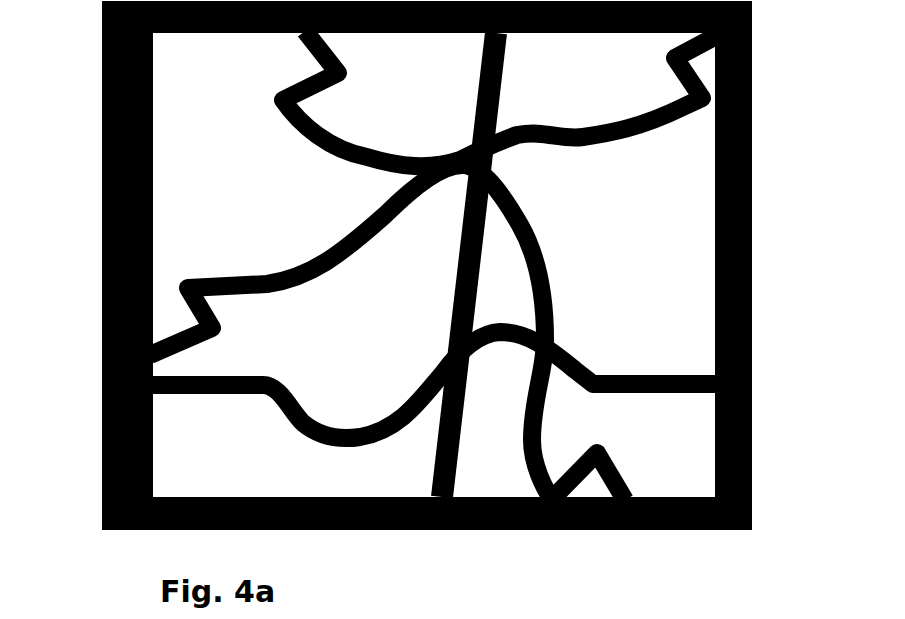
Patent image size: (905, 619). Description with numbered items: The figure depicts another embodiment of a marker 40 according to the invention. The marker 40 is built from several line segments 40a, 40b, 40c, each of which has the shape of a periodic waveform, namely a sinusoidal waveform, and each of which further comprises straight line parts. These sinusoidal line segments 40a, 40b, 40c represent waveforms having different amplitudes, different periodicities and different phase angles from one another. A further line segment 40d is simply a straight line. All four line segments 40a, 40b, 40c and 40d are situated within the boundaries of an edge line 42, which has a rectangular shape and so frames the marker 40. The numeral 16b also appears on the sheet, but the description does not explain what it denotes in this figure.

The marker 40 is at (424, 302).
The line segment 40a is at (210, 393).
The line segment 40b is at (233, 277).
The line segment 40c is at (533, 463).
The line segment 40d is at (430, 467).
The edge line 42 is at (752, 343).
The sensor element 16b is at (550, 610).